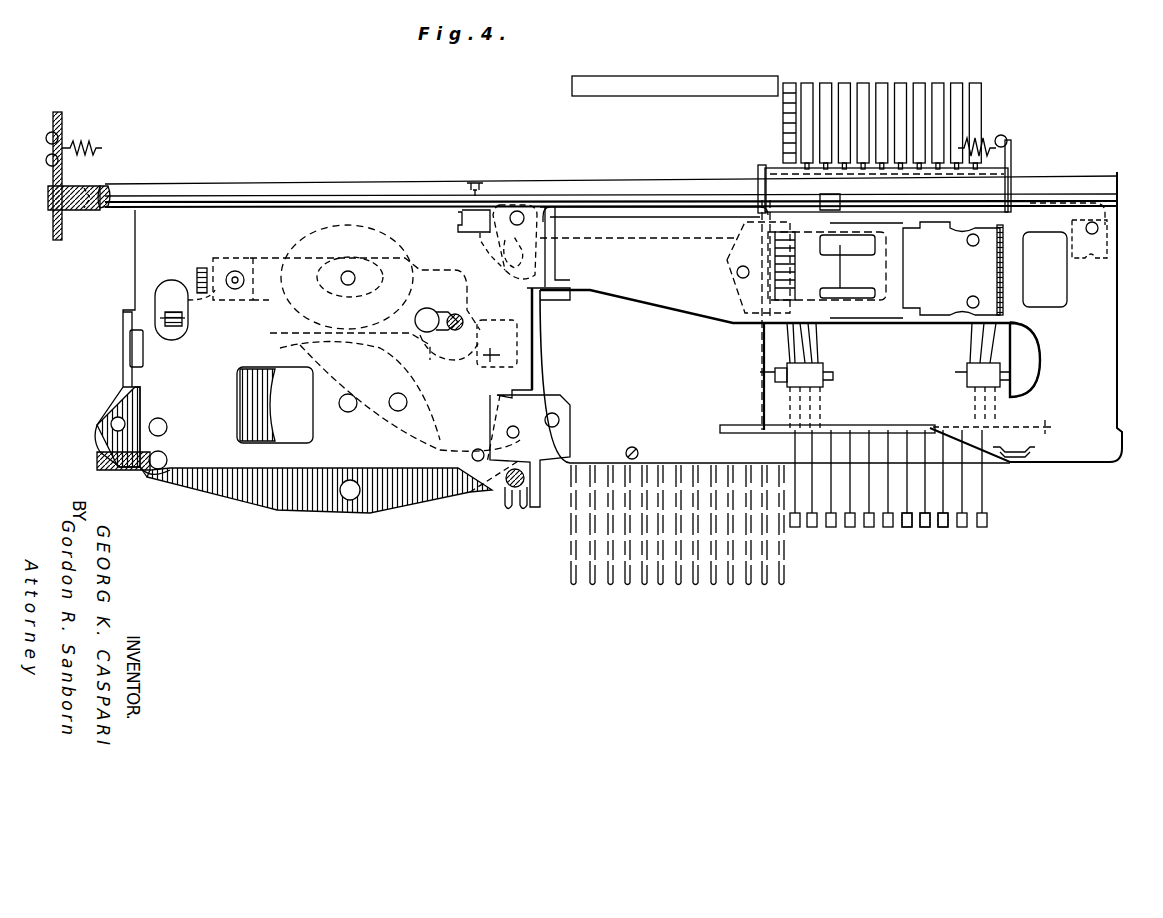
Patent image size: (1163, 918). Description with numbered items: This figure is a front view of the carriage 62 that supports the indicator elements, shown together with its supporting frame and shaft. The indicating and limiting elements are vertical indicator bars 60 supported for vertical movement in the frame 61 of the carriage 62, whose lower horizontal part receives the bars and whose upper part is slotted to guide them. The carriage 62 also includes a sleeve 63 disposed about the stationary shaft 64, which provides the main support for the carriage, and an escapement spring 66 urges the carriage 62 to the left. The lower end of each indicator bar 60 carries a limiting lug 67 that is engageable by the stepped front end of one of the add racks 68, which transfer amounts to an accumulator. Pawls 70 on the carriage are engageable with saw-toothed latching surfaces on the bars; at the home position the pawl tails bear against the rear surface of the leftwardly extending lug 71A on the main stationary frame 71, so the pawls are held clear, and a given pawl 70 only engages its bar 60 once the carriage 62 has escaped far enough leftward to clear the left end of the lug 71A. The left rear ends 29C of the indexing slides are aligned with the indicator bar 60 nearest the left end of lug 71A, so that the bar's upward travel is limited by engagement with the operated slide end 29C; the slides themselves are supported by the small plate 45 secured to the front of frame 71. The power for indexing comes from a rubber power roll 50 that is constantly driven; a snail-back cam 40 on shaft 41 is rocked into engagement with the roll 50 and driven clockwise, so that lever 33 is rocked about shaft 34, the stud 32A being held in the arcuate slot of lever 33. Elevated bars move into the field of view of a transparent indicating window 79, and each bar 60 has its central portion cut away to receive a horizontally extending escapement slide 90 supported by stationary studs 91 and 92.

The left rear ends of the slides 29C is at (797, 275).
The stud 32A is at (452, 312).
The lever 33 is at (257, 256).
The shaft 34 is at (232, 277).
The snail-back cam 40 is at (382, 236).
The shaft 41 is at (340, 262).
The small plate 45 is at (905, 290).
The rubber power roll 50 is at (300, 400).
The indicator bars 60 is at (920, 88).
The frame 61 is at (762, 350).
The carriage 62 is at (770, 157).
The sleeve 63 is at (996, 188).
The stationary shaft 64 is at (327, 186).
The escapement spring 66 is at (103, 148).
The limiting lug 67 is at (940, 528).
The add racks 68 is at (570, 548).
The pawls 70 is at (818, 373).
The main stationary frame 71 is at (1105, 278).
The leftwardly extending lug 71A is at (858, 410).
The transparent indicating window 79 is at (656, 82).
The escapement slide 90 is at (690, 207).
The stationary stud 91 is at (1100, 228).
The stationary stud 92 is at (520, 212).